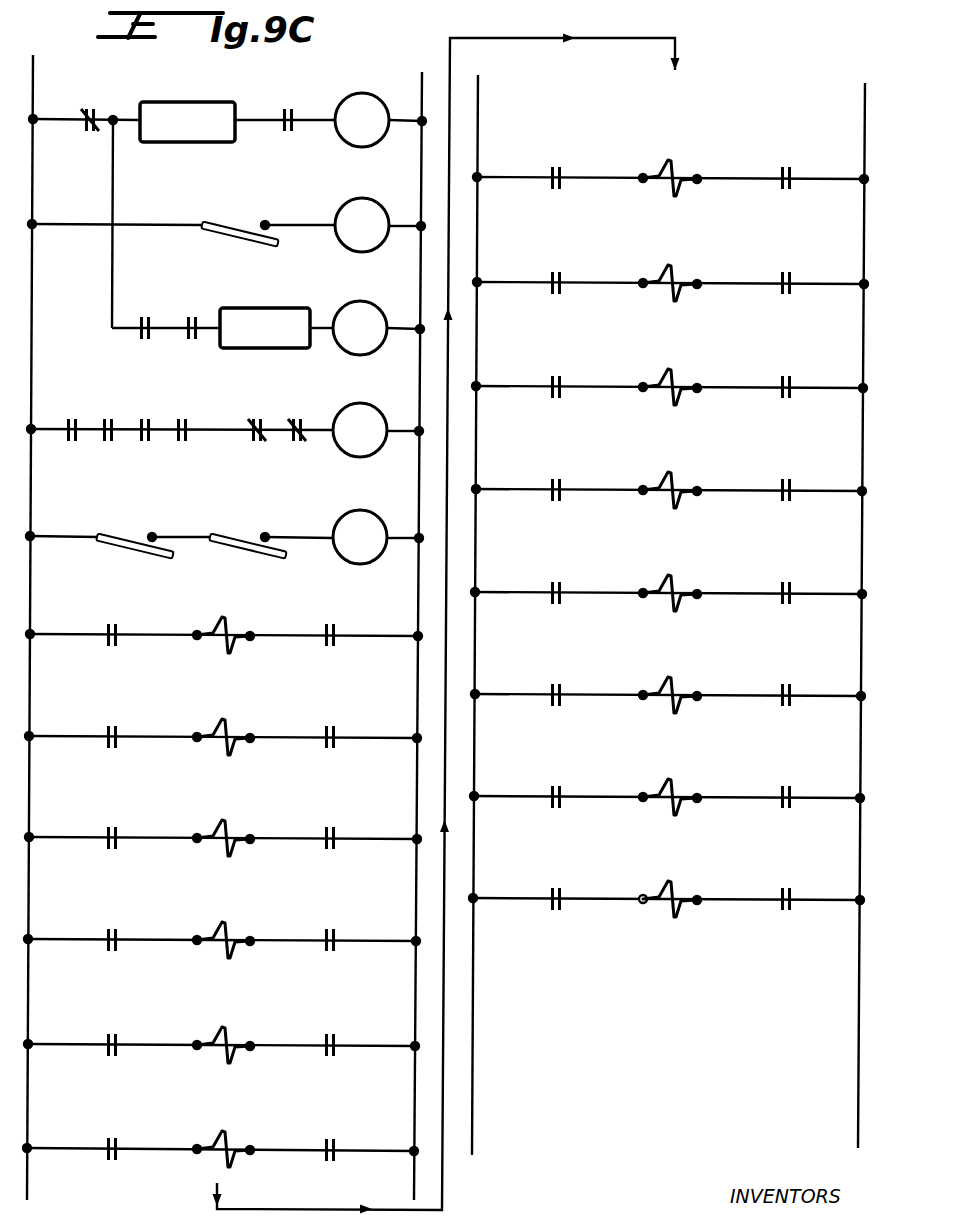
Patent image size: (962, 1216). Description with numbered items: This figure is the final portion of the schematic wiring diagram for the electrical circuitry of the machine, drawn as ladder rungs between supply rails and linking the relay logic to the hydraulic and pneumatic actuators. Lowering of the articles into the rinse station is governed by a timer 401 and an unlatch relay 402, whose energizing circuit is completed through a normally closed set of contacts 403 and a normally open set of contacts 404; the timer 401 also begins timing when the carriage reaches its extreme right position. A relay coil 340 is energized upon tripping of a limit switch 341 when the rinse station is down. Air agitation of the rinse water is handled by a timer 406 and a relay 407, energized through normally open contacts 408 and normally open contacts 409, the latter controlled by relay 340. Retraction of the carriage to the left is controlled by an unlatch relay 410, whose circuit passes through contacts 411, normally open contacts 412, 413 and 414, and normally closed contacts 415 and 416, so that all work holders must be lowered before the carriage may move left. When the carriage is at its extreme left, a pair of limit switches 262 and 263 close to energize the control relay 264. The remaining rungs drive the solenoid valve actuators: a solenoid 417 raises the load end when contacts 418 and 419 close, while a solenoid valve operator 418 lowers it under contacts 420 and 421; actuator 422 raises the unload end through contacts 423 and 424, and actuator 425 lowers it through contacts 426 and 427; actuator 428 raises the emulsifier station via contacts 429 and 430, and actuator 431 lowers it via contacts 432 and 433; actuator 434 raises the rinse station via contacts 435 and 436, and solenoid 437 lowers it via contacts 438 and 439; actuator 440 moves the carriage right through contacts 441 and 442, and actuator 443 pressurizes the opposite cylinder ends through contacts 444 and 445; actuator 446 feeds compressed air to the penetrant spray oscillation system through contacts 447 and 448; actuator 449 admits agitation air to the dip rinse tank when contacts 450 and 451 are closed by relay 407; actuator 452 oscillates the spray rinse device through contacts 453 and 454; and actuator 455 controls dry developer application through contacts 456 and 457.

The timer 401 is at (217, 72).
The unlatch relay 402 is at (401, 74).
The normally closed contacts 403 is at (107, 82).
The normally open contacts 404 is at (322, 88).
The relay coil 340 is at (373, 184).
The limit switch 341 is at (280, 200).
The timer 406 is at (314, 282).
The relay 407 is at (392, 284).
The normally open contacts 408 is at (166, 290).
The normally open contacts 409 is at (230, 290).
The unlatch relay 410 is at (384, 384).
The contacts 411 is at (68, 420).
The normally open contacts 412 is at (104, 420).
The normally open contacts 413 is at (141, 420).
The normally open contacts 414 is at (178, 420).
The normally closed contacts 415 is at (252, 420).
The normally closed contacts 416 is at (315, 402).
The limit switch 262 is at (157, 507).
The limit switch 263 is at (269, 507).
The control relay 264 is at (384, 491).
The solenoid 417 is at (264, 597).
The contacts / solenoid valve operator 418 is at (165, 606).
The contacts 419 is at (368, 603).
The relay contacts 420 is at (165, 708).
The relay contacts 421 is at (368, 705).
The solenoid valve actuator 422 is at (264, 800).
The relay contacts 423 is at (165, 809).
The relay contacts 424 is at (368, 806).
The solenoid valve actuator 425 is at (264, 902).
The contacts 426 is at (165, 911).
The contacts 427 is at (368, 908).
The solenoid valve actuator 428 is at (264, 1007).
The contacts 429 is at (165, 1016).
The contacts 430 is at (368, 1013).
The solenoid valve actuator 431 is at (264, 1111).
The contacts 432 is at (165, 1120).
The contacts 433 is at (368, 1117).
The solenoid valve actuator 434 is at (727, 140).
The contacts 435 is at (612, 140).
The contacts 436 is at (836, 142).
The solenoid 437 is at (727, 245).
The contacts 438 is at (612, 245).
The contacts 439 is at (836, 247).
The solenoid valve actuator 440 is at (727, 349).
The contacts 441 is at (612, 349).
The contacts 442 is at (836, 351).
The solenoid valve actuator 443 is at (727, 452).
The contacts 444 is at (612, 452).
The contacts 445 is at (836, 454).
The solenoid valve actuator 446 is at (727, 555).
The contacts 447 is at (612, 555).
The contacts 448 is at (836, 557).
The solenoid valve actuator 449 is at (727, 657).
The contacts 450 is at (612, 657).
The contacts 451 is at (836, 659).
The solenoid valve actuator 452 is at (727, 759).
The contacts 453 is at (612, 759).
The contacts 454 is at (836, 761).
The solenoid valve actuator 455 is at (727, 861).
The contacts 456 is at (612, 861).
The contacts 457 is at (836, 863).